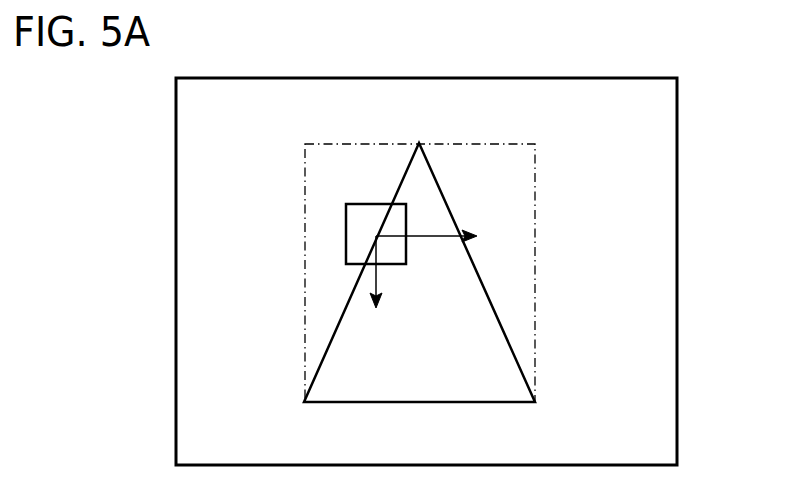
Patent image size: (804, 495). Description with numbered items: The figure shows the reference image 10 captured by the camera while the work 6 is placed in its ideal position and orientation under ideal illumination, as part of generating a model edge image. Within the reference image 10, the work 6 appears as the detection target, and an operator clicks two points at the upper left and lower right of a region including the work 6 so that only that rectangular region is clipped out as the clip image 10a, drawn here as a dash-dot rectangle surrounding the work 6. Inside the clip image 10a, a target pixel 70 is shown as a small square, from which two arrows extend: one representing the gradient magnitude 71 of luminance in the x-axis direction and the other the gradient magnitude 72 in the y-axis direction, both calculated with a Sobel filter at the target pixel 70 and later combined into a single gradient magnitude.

The reference image 10 is at (677, 278).
The clip image 10a is at (535, 216).
The work 6 is at (509, 321).
The target pixel 70 is at (364, 204).
The gradient magnitude in x-axis direction 71 is at (426, 236).
The gradient magnitude in y-axis direction 72 is at (378, 283).